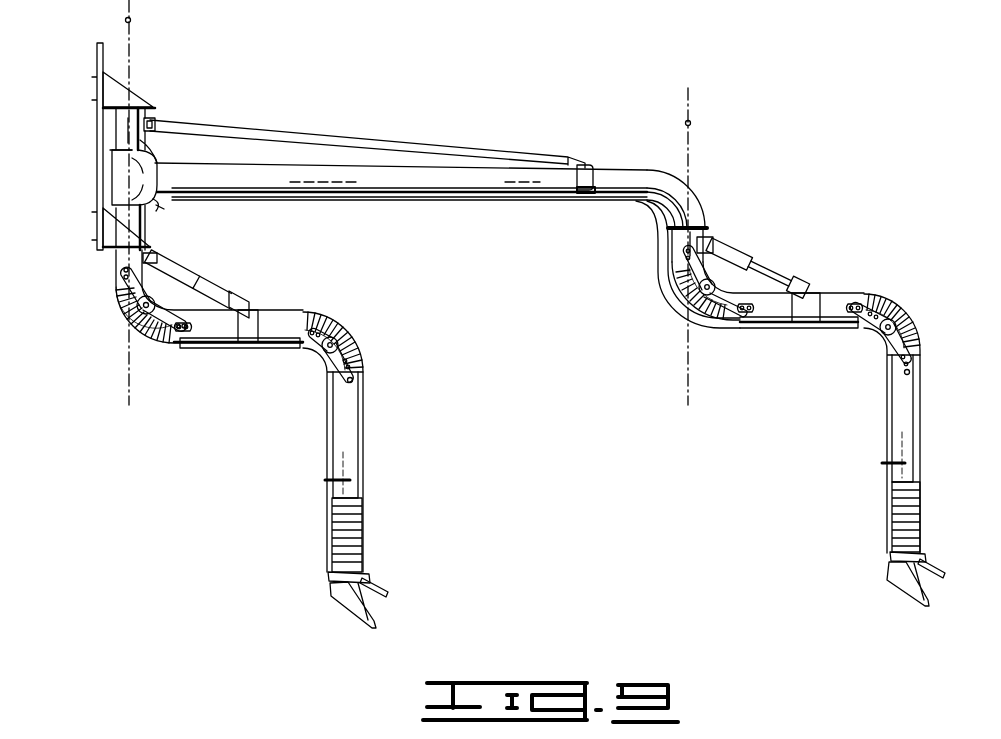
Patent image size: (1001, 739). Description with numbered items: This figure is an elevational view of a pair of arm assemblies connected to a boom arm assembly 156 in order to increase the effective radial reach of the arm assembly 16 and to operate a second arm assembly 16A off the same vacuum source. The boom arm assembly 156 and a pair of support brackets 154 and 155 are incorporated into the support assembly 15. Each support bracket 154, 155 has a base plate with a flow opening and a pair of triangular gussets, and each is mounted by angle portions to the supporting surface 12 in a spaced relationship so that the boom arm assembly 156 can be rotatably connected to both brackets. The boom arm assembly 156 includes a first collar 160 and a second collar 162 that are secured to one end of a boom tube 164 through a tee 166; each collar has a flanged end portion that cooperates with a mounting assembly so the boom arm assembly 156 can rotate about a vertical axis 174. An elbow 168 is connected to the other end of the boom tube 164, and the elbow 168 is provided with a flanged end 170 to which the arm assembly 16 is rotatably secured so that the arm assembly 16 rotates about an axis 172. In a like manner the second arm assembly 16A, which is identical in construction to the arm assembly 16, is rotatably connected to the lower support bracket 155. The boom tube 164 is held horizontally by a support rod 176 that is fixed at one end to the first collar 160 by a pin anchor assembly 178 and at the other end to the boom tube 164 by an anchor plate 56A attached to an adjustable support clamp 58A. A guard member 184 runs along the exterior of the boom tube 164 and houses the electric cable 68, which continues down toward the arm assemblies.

The supporting surface 12 is at (99, 60).
The axis 174 is at (123, 21).
The support assembly 15 is at (137, 90).
The support bracket 154 is at (150, 107).
The pin anchor assembly 178 is at (156, 121).
The first collar 160 is at (150, 142).
The tee 166 is at (125, 172).
The second collar 162 is at (148, 222).
The support bracket 155 is at (153, 247).
The second arm assembly 16A is at (364, 352).
The support rod 176 is at (367, 140).
The guard member 184 is at (307, 203).
The boom arm assembly 156 is at (443, 205).
The boom tube 164 is at (528, 190).
The anchor plate 56A is at (583, 164).
The adjustable support clamp 58A is at (590, 196).
The axis 172 is at (692, 124).
The elbow 168 is at (683, 196).
The flanged end 170 is at (707, 227).
The arm assembly 16 is at (837, 294).
The electric cable 68 is at (660, 280).